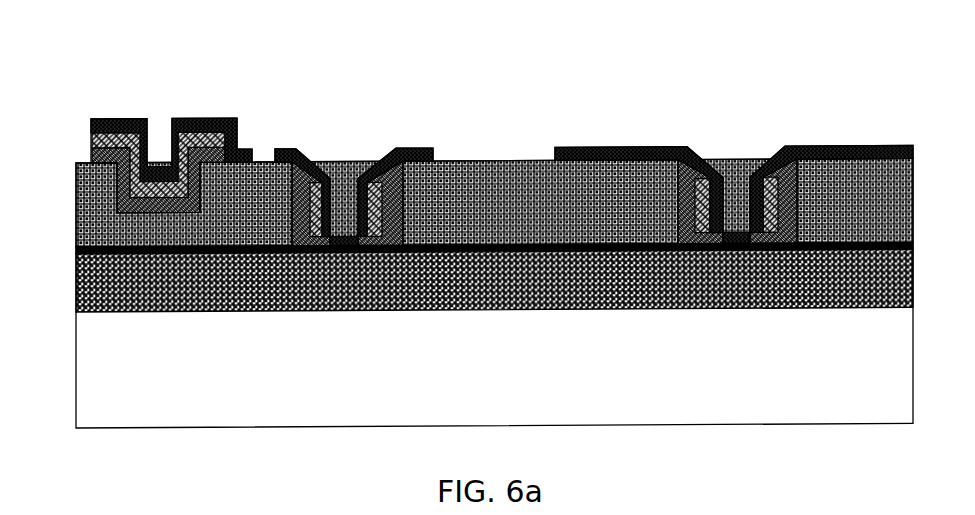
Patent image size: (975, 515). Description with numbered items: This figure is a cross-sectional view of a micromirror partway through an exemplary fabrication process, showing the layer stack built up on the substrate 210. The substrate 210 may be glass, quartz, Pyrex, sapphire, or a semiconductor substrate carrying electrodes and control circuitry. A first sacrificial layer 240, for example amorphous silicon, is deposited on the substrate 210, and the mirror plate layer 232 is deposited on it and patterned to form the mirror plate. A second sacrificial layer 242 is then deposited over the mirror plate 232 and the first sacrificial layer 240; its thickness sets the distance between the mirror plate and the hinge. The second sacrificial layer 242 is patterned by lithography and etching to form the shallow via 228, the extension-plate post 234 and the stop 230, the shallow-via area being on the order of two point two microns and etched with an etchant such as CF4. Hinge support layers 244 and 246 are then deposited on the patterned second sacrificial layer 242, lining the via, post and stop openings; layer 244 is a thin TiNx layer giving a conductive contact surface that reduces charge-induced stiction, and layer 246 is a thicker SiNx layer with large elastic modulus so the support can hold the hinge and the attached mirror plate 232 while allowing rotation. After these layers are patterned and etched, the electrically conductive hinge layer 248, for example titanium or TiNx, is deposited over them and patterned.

The substrate 210 is at (557, 428).
The first sacrificial layer 240 is at (732, 312).
The mirror plate layer 232 is at (547, 254).
The second sacrificial layer 242 is at (469, 163).
The hinge support layer 244 is at (90, 157).
The hinge support layer 246 is at (90, 138).
The hinge layer 248 is at (90, 120).
The stop 230 is at (152, 97).
The shallow via 228 is at (338, 136).
The extension-plate post 234 is at (731, 133).